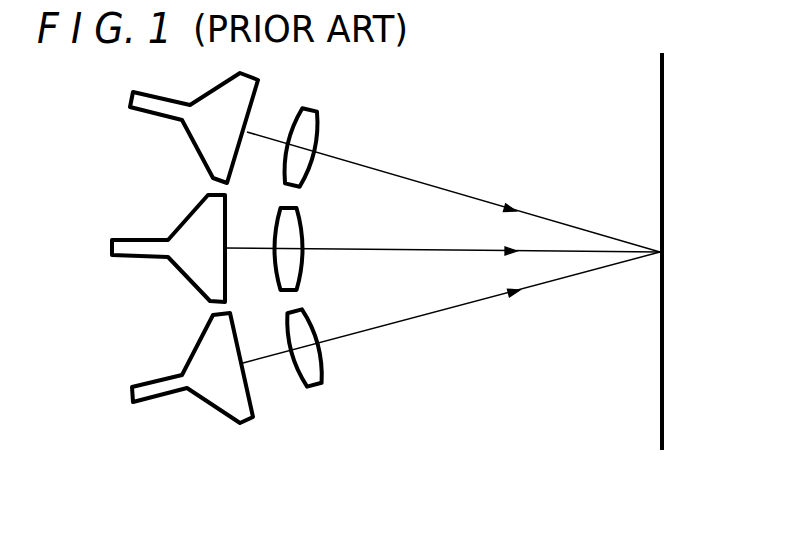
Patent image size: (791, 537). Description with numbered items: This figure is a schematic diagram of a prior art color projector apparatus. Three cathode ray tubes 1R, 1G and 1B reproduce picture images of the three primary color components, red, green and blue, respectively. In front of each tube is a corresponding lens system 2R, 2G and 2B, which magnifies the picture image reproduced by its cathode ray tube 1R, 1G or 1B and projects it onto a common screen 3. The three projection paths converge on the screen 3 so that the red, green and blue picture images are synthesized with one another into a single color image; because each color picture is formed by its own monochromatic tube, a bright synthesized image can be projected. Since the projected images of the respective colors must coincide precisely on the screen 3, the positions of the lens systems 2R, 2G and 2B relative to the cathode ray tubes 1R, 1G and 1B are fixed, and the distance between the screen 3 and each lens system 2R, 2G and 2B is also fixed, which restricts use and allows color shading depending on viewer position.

The cathode ray tube 1R is at (192, 146).
The cathode ray tube 1G is at (178, 272).
The cathode ray tube 1B is at (200, 406).
The lens system 2R is at (320, 133).
The lens system 2G is at (302, 230).
The lens system 2B is at (312, 323).
The screen 3 is at (662, 102).